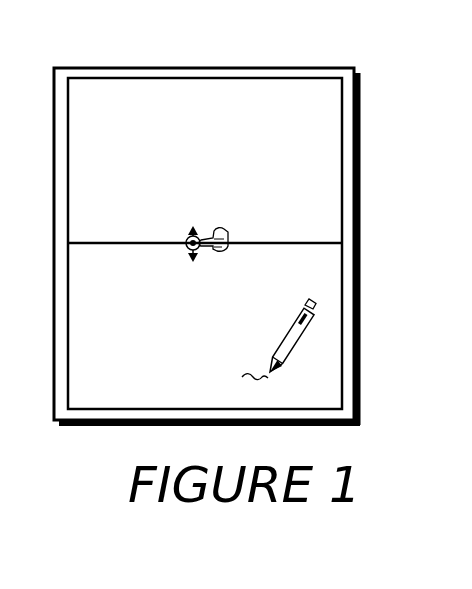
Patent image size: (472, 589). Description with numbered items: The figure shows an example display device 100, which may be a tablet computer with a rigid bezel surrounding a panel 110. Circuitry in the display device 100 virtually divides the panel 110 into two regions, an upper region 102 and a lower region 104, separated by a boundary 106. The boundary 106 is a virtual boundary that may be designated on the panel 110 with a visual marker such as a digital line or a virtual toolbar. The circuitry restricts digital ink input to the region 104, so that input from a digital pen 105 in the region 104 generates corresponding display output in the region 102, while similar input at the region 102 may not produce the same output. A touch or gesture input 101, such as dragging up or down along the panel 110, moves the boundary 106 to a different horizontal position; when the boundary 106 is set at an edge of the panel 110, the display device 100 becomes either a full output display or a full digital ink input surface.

The display device 100 is at (223, 64).
The panel 110 is at (342, 77).
The boundary 106 is at (312, 242).
The region 102 is at (132, 224).
The region 104 is at (128, 390).
The gesture input 101 is at (219, 227).
The digital pen 105 is at (312, 322).